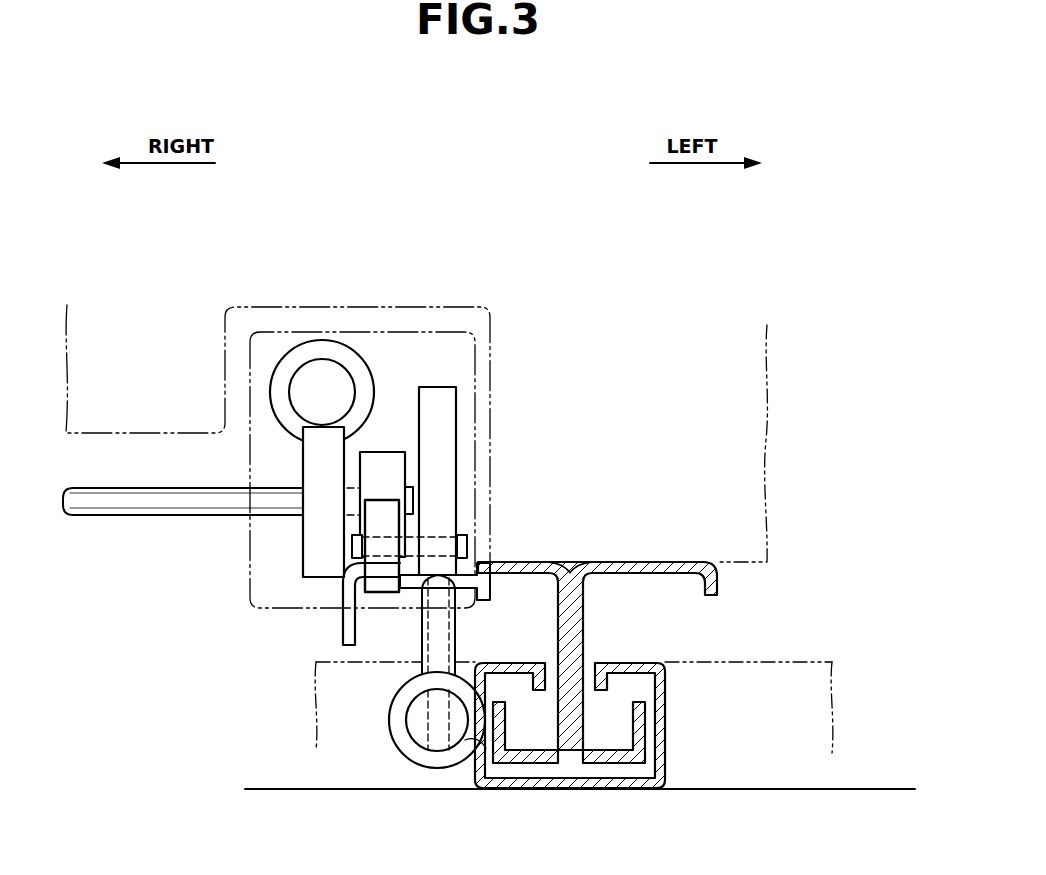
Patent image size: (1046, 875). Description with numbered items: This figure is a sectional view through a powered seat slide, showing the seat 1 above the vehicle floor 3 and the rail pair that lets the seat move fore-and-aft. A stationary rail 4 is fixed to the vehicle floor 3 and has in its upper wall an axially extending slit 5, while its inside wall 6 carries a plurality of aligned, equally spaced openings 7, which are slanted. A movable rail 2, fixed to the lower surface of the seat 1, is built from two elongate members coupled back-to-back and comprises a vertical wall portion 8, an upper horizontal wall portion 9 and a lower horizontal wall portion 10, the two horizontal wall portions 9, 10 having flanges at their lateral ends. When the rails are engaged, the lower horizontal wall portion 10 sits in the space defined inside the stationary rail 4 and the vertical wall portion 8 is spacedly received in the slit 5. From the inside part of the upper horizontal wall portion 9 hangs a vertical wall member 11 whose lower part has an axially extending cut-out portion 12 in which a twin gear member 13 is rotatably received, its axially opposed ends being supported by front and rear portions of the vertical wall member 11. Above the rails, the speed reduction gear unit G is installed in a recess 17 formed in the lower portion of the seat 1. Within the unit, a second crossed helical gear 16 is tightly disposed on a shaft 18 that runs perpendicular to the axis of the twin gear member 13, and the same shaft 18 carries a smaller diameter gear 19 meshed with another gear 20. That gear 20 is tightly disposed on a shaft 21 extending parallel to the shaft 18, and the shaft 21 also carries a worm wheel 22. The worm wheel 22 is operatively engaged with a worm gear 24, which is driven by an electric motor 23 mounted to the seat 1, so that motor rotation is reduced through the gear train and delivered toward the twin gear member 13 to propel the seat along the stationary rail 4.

The seat 1 is at (767, 425).
The movable rail 2 is at (637, 551).
The vehicle floor 3 is at (773, 661).
The stationary rail 4 is at (674, 735).
The slit 5 is at (590, 677).
The inside wall 6 is at (479, 772).
The openings 7 is at (471, 746).
The vertical wall portion 8 is at (583, 604).
The upper horizontal wall portion 9 is at (545, 560).
The lower horizontal wall portion 10 is at (582, 763).
The vertical wall member 11 is at (450, 641).
The cut-out portion 12 is at (487, 561).
The twin gear member 13 is at (378, 724).
The second crossed helical gear 16 is at (445, 387).
The recess 17 is at (355, 305).
The shaft 18 is at (350, 548).
The smaller diameter gear 19 is at (386, 595).
The gear 20 is at (390, 452).
The shaft 21 is at (117, 513).
The worm wheel 22 is at (306, 469).
The electric motor 23 is at (298, 348).
The worm gear 24 is at (290, 383).
The speed reduction gear unit G is at (438, 332).